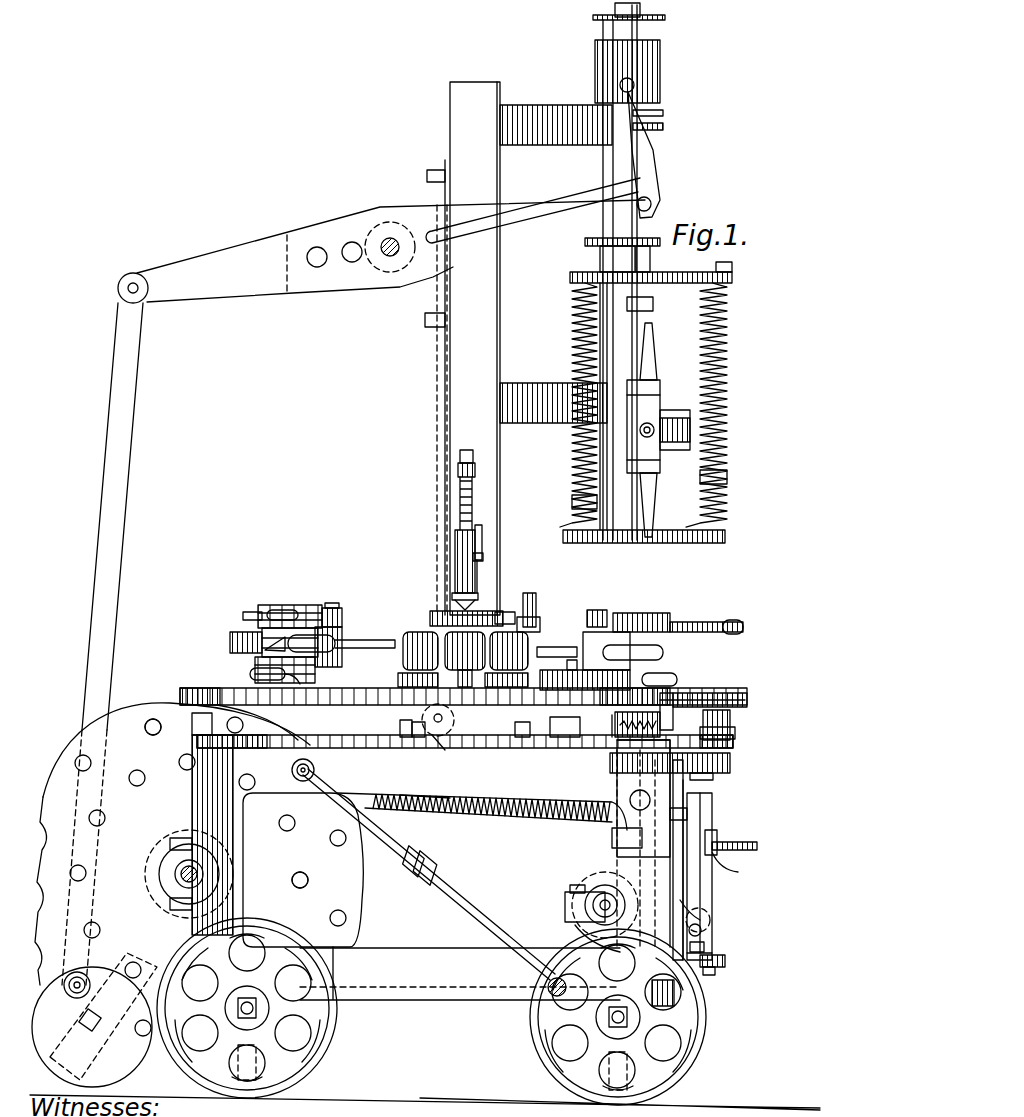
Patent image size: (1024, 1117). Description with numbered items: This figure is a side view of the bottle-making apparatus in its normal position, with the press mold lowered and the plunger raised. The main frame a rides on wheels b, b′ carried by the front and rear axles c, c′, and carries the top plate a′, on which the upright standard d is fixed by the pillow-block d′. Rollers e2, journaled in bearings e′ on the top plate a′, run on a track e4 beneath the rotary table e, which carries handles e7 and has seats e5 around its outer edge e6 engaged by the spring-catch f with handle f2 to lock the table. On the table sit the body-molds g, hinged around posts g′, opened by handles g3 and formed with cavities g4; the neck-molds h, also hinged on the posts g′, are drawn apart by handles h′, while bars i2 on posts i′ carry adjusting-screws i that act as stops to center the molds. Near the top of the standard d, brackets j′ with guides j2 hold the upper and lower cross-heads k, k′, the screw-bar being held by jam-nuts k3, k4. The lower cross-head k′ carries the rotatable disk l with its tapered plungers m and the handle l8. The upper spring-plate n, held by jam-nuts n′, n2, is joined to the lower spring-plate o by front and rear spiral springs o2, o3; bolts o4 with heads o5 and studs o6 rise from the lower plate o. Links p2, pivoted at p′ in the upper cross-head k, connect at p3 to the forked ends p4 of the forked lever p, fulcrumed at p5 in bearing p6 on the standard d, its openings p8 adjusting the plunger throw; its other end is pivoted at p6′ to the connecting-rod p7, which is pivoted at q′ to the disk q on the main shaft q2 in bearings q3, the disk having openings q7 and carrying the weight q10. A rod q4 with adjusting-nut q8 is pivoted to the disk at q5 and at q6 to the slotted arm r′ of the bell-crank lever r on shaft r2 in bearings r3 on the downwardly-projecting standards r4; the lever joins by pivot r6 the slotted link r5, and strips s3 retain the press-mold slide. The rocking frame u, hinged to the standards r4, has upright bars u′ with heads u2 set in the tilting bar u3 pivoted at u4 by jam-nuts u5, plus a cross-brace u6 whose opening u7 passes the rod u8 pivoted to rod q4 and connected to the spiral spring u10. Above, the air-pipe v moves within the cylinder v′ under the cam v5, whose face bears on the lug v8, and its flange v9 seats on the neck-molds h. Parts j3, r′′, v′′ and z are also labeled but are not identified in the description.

The main frame a is at (420, 878).
The top plate a′ is at (479, 825).
The wheel b is at (627, 1017).
The wheel b′ is at (254, 1008).
The front axle c is at (616, 1017).
The rear axle c′ is at (246, 1008).
The upright standard d is at (473, 348).
The pillow-block d′ is at (557, 725).
The rotary table e is at (473, 695).
The bearings e′ is at (595, 747).
The wheels or rollers e2 is at (448, 716).
The track e4 is at (406, 722).
The seats e5 is at (268, 695).
The outer edge e6 is at (197, 688).
The handles e7 is at (252, 673).
The spring-catch f is at (684, 695).
The handle f2 is at (674, 718).
The body-molds g is at (442, 690).
The posts g′ is at (464, 625).
The handles g3 is at (260, 642).
The cavities g4 is at (465, 651).
The neck-molds h is at (456, 627).
The handles h′ is at (706, 616).
The adjusting-screws i is at (605, 726).
The posts i′ is at (539, 607).
The bars i2 is at (572, 628).
The brackets j′ is at (556, 249).
The guides j2 is at (598, 255).
The head block j3 is at (662, 50).
The upper cross-head k is at (644, 271).
The lower cross-head k′ is at (570, 406).
The jam-nut k3 is at (604, 22).
The jam-nut k4 is at (664, 126).
The rotatable disk l is at (662, 402).
The handle l8 is at (675, 430).
The tapered plungers m is at (657, 350).
The upper spring-plate n is at (651, 267).
The jam-nut n′ is at (655, 259).
The jam-nut n2 is at (654, 306).
The lower spring-plate o is at (672, 543).
The front spiral springs o2 is at (720, 432).
The rear spiral springs o3 is at (580, 330).
The bolts o4 is at (718, 480).
The heads o5 is at (732, 270).
The studs o6 is at (573, 502).
The forked lever p is at (391, 251).
The pivot p′ is at (600, 83).
The links p2 is at (656, 162).
The lower ends p3 is at (652, 205).
The forked ends p4 is at (550, 197).
The pivot p5 is at (386, 254).
The bearing p6 is at (420, 248).
The pivot p6′ is at (133, 270).
The connecting-rod p7 is at (118, 418).
The openings p8 is at (325, 252).
The disk q is at (199, 869).
The pivot q′ is at (78, 935).
The main shaft q2 is at (175, 877).
The bearings q3 is at (182, 842).
The rod q4 is at (395, 833).
The pivot q5 is at (294, 772).
The pivot q6 is at (548, 990).
The openings q7 is at (155, 735).
The adjusting-nut q8 is at (432, 885).
The weight q10 is at (100, 1045).
The bell-crank lever r is at (605, 899).
The slotted arm r′ is at (579, 938).
The shaft r2 is at (607, 898).
The bearings r3 is at (566, 905).
The downwardly-projecting standards r4 is at (685, 795).
The slotted link r5 is at (700, 905).
The pivot r6 is at (704, 945).
The pin r′′ is at (718, 926).
The strips s3 is at (618, 841).
The rocking frame u is at (708, 920).
The upright bars u′ is at (720, 873).
The heads u2 is at (688, 814).
The tilting bar u3 is at (726, 961).
The pivot u4 is at (712, 950).
The jam-nuts u5 is at (715, 972).
The cross-brace u6 is at (715, 838).
The opening u7 is at (733, 867).
The rod u8 is at (510, 816).
The spiral spring u10 is at (482, 800).
The air-pipe v is at (445, 490).
The cylinder v′ is at (442, 561).
The cam v5 is at (483, 549).
The lug v8 is at (486, 576).
The flange v9 is at (455, 596).
The base plate v′′ is at (476, 600).
The spring block z is at (616, 725).